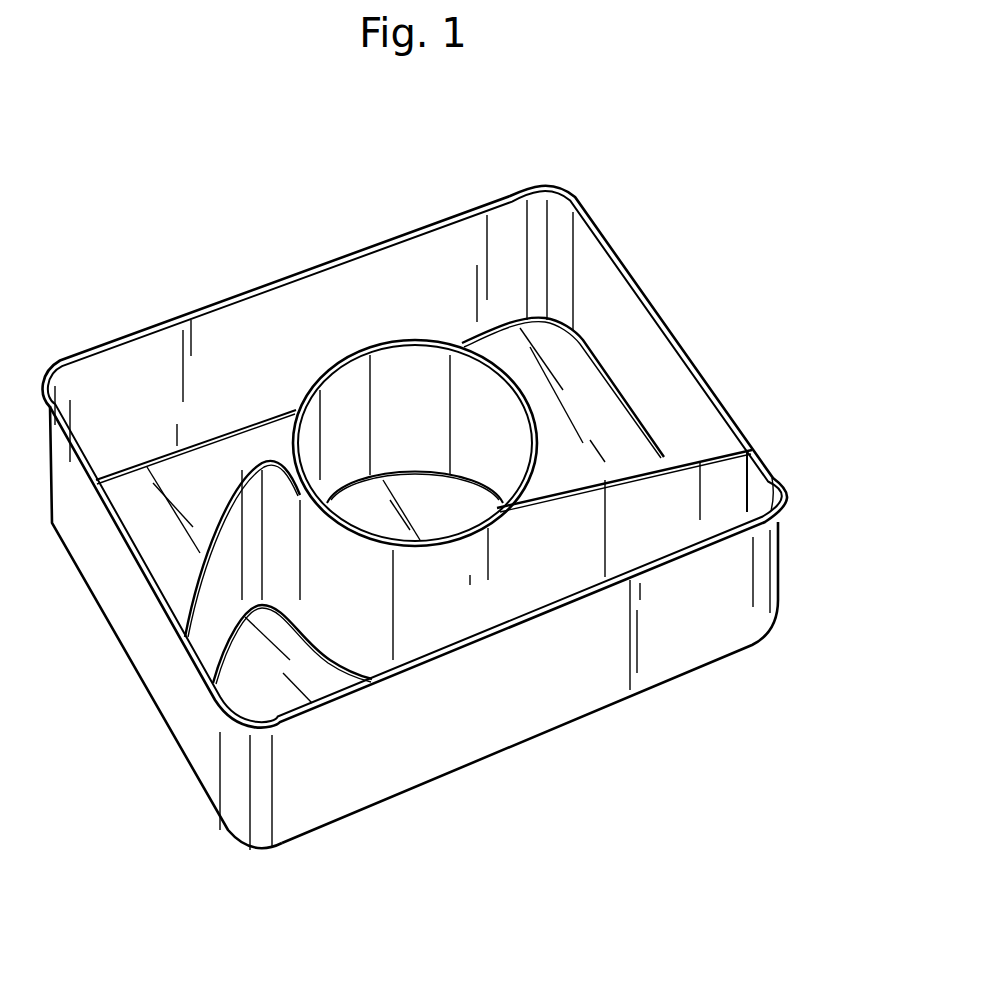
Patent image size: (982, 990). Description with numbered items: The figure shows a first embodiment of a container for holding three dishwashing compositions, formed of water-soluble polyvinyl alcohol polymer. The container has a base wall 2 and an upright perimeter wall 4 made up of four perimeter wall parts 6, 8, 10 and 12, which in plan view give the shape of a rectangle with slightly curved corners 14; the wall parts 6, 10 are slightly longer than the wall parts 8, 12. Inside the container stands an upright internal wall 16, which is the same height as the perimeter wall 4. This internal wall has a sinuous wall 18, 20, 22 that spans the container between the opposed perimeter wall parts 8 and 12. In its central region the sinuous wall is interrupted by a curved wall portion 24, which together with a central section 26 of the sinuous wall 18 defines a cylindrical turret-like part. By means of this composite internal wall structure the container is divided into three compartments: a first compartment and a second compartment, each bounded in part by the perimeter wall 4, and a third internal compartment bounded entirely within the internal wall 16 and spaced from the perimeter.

The base wall 2 is at (212, 490).
The upright perimeter wall 4 is at (470, 206).
The perimeter wall part 6 is at (300, 335).
The perimeter wall part 8 is at (665, 320).
The perimeter wall part 10 is at (688, 660).
The perimeter wall part 12 is at (130, 647).
The curved corners 14 is at (556, 187).
The upright internal wall 16 is at (622, 438).
The sinuous wall 18 is at (617, 530).
The sinuous wall 20 is at (267, 545).
The sinuous wall 22 is at (408, 602).
The curved wall portion 24 is at (428, 340).
The central section 26 is at (467, 573).